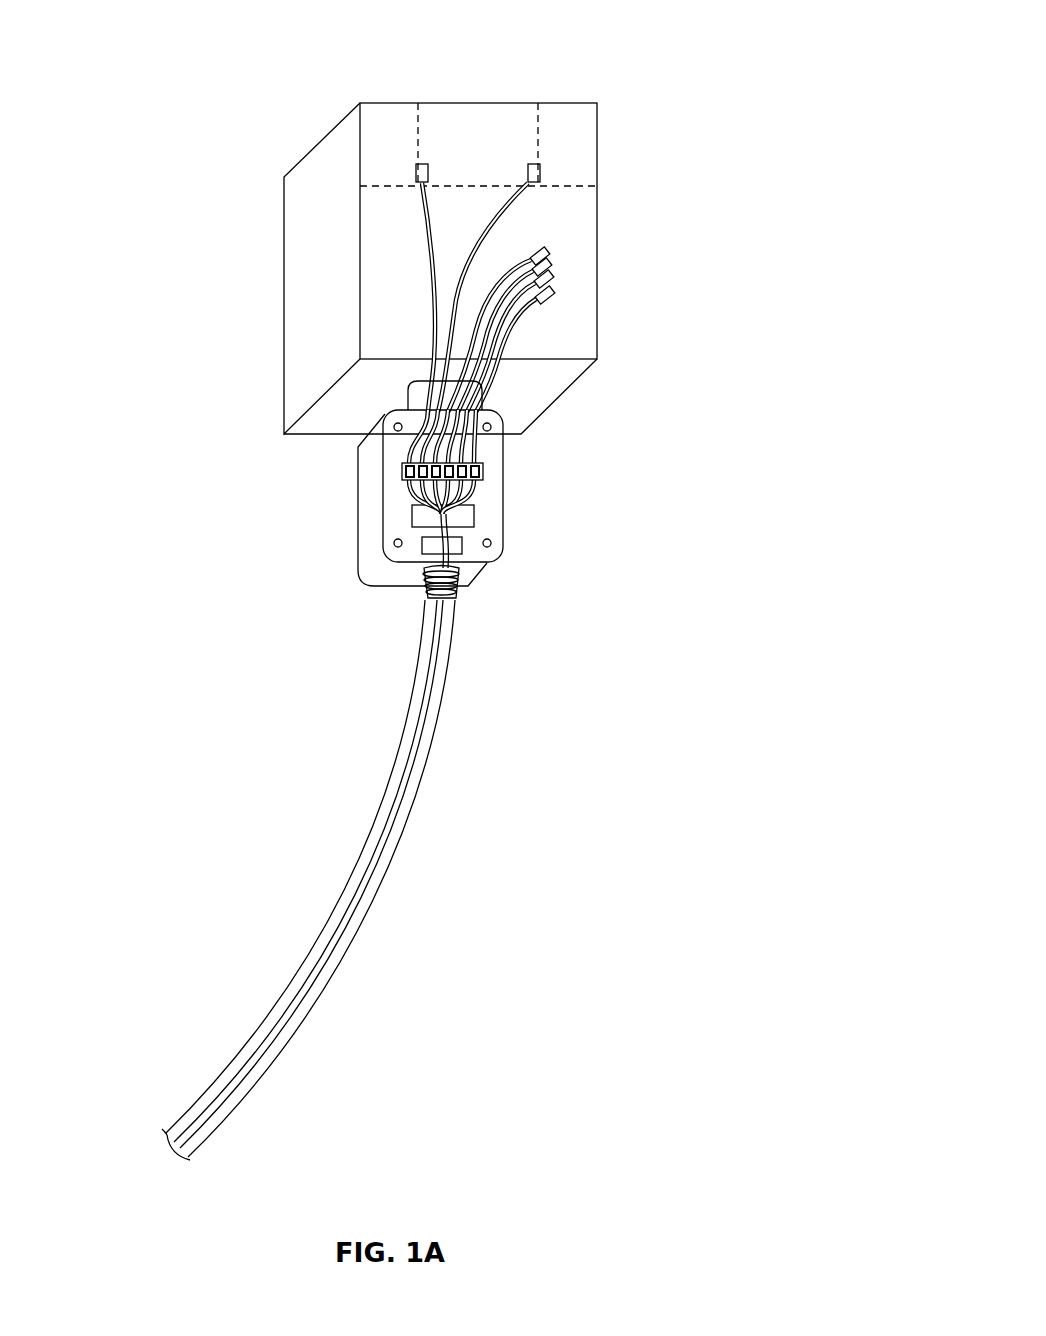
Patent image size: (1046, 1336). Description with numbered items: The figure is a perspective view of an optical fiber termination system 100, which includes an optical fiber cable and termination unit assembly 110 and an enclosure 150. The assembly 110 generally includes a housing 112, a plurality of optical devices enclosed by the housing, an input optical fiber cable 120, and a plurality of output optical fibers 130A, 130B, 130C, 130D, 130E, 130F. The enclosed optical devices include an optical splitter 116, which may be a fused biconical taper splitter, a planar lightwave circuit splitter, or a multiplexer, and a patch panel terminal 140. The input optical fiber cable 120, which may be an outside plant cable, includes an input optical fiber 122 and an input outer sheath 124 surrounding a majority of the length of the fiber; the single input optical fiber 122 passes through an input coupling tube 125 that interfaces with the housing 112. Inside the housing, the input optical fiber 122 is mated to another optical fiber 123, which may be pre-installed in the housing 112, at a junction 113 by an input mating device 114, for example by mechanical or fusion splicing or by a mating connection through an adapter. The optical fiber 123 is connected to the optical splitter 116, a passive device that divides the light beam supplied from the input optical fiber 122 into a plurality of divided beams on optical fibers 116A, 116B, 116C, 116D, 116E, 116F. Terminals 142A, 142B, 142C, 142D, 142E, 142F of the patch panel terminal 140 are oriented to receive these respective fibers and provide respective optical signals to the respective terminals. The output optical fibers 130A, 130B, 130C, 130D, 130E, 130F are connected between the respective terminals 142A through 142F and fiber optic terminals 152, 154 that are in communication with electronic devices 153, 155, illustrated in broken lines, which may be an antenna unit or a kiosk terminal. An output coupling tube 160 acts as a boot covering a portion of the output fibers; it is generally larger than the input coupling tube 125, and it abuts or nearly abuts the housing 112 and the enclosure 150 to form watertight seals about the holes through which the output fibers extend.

The optical fiber termination system 100 is at (215, 47).
The optical fiber cable and termination unit assembly 110 is at (712, 588).
The housing 112 is at (365, 518).
The junction 113 is at (478, 553).
The input mating device 114 is at (420, 553).
The optical splitter 116 is at (500, 545).
The optical fiber 116A is at (403, 493).
The optical fiber 116B is at (400, 520).
The optical fiber 116C is at (400, 530).
The optical fiber 116D is at (478, 545).
The optical fiber 116E is at (470, 483).
The optical fiber 116F is at (490, 486).
The input optical fiber cable 120 is at (342, 880).
The input optical fiber 122 is at (345, 918).
The optical fiber 123 is at (423, 544).
The input outer sheath 124 is at (383, 865).
The input coupling tube 125 is at (455, 590).
The output optical fiber 130A is at (430, 242).
The output optical fiber 130B is at (500, 215).
The output optical fiber 130C is at (510, 262).
The output optical fiber 130D is at (472, 307).
The output optical fiber 130E is at (475, 333).
The output optical fiber 130F is at (473, 347).
The patch panel terminal 140 is at (475, 415).
The terminal 142A is at (402, 473).
The terminal 142B is at (430, 463).
The terminal 142C is at (443, 463).
The terminal 142D is at (456, 463).
The terminal 142E is at (469, 463).
The terminal 142F is at (484, 471).
The enclosure 150 is at (483, 242).
The fiber optic terminal 152 is at (423, 163).
The electronic device 153 is at (372, 117).
The fiber optic terminal 154 is at (534, 163).
The electronic device 155 is at (586, 120).
The output coupling tube 160 is at (420, 398).